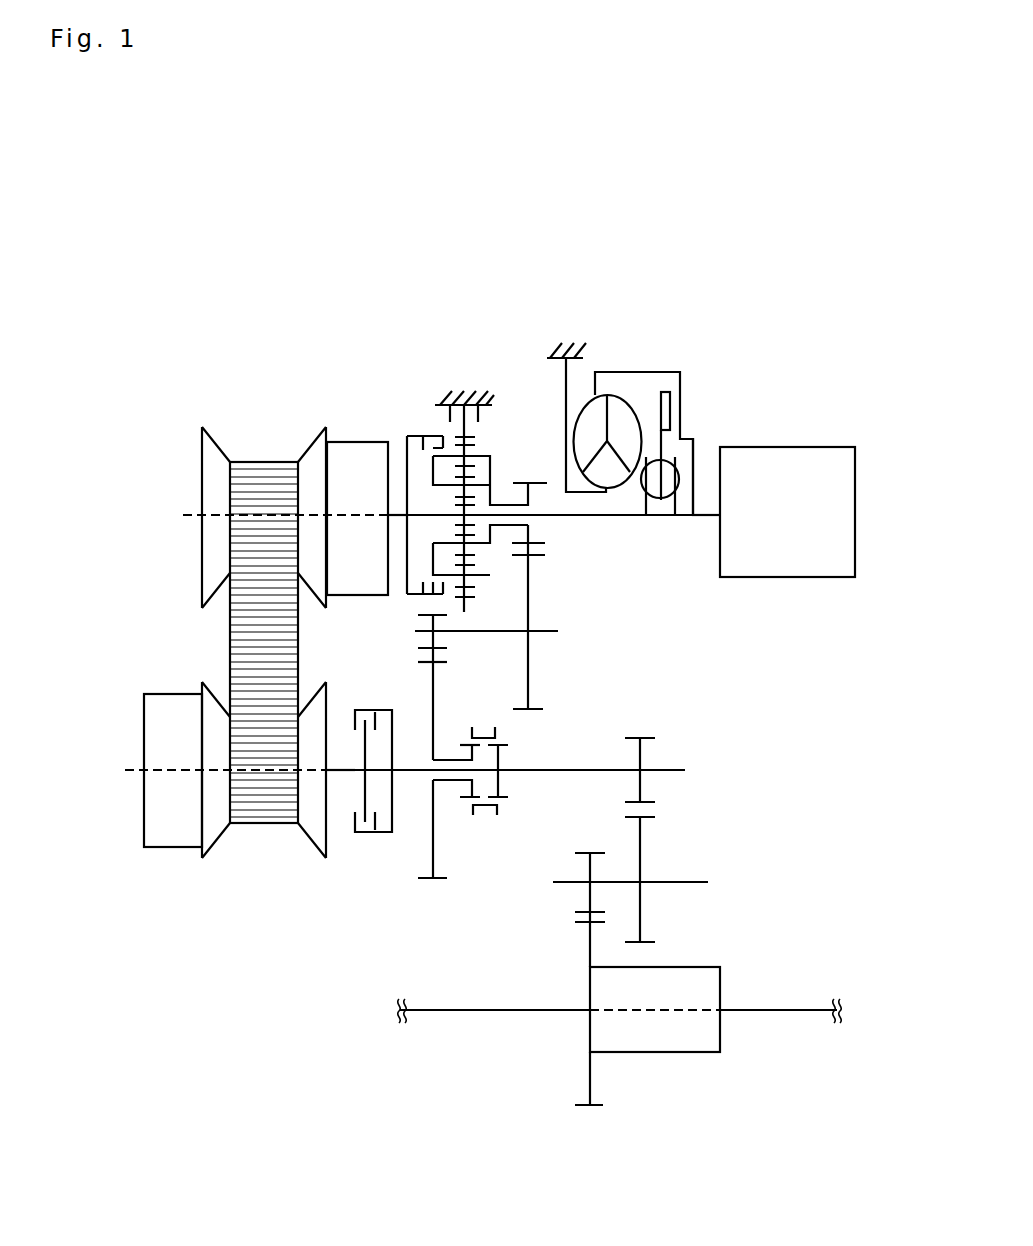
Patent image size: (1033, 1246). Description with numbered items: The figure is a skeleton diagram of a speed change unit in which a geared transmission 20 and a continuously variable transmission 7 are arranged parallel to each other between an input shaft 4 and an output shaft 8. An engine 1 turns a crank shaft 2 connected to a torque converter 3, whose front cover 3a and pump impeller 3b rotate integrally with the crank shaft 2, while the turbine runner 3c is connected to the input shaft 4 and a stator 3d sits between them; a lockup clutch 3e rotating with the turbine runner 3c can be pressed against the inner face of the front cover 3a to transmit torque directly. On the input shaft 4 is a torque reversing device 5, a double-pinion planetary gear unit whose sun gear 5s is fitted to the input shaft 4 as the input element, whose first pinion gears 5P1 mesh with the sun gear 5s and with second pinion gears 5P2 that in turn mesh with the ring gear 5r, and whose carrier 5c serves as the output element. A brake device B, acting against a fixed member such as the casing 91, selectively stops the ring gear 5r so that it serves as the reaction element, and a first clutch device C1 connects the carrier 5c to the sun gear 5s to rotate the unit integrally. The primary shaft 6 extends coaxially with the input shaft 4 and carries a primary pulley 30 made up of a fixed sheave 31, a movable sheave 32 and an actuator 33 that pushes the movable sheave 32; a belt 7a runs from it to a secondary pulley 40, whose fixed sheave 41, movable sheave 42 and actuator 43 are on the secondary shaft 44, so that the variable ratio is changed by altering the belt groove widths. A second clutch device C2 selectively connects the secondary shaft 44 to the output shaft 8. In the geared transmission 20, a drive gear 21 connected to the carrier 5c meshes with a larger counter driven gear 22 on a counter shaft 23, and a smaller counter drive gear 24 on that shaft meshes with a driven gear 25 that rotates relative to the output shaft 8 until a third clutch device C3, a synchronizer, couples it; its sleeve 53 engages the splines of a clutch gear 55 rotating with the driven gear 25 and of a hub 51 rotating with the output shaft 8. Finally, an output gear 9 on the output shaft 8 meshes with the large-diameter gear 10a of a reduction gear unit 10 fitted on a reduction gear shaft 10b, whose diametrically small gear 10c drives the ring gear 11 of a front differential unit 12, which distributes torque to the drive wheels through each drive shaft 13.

The engine 1 is at (800, 447).
The crank shaft 2 is at (705, 517).
The torque converter 3 is at (643, 331).
The front cover 3a is at (693, 458).
The pump impeller 3b is at (583, 402).
The turbine runner 3c is at (628, 402).
The stator 3d is at (613, 472).
The lockup clutch 3e is at (670, 412).
The input shaft 4 is at (605, 517).
The torque reversing device 5 is at (505, 446).
The carrier 5c is at (433, 468).
The sun gear 5s is at (476, 523).
The first pinion gears 5P1 is at (470, 535).
The second pinion gears 5P2 is at (468, 565).
The ring gear 5r is at (468, 598).
The primary shaft 6 is at (396, 517).
The continuously variable transmission 7 is at (200, 382).
The belt 7a is at (230, 637).
The output shaft 8 is at (700, 771).
The output gear 9 is at (650, 797).
The reduction gear unit 10 is at (750, 862).
The counter drive gear 10a is at (648, 940).
The reduction gear shaft 10b is at (690, 884).
The diametrically-small gear 10c is at (577, 911).
The ring gear 11 is at (583, 1108).
The front differential unit 12 is at (694, 1054).
The drive shaft 13 is at (457, 1012).
The geared transmission 20 is at (570, 653).
The drive gear 21 is at (537, 483).
The counter driven gear 22 is at (543, 711).
The counter shaft 23 is at (503, 632).
The counter drive gear 24 is at (427, 646).
The driven gear 25 is at (445, 662).
The primary pulley 30 is at (269, 417).
The fixed sheave 31 is at (214, 438).
The movable sheave 32 is at (312, 458).
The actuator 33 is at (355, 440).
The secondary pulley 40 is at (273, 883).
The fixed sheave 41 is at (312, 828).
The movable sheave 42 is at (228, 842).
The actuator 43 is at (182, 848).
The secondary shaft 44 is at (340, 772).
The hub 51 is at (502, 748).
The sleeve 53 is at (497, 729).
The clutch gear 55 is at (465, 742).
The transmission case 91 is at (444, 390).
The brake device B is at (463, 388).
The first clutch device C1 is at (426, 499).
The second clutch device C2 is at (374, 757).
The third clutch device C3 is at (464, 811).